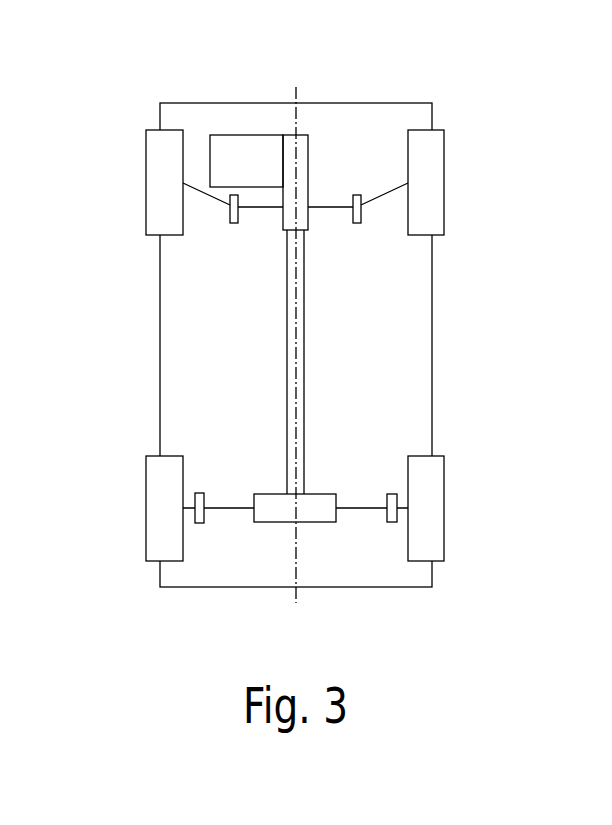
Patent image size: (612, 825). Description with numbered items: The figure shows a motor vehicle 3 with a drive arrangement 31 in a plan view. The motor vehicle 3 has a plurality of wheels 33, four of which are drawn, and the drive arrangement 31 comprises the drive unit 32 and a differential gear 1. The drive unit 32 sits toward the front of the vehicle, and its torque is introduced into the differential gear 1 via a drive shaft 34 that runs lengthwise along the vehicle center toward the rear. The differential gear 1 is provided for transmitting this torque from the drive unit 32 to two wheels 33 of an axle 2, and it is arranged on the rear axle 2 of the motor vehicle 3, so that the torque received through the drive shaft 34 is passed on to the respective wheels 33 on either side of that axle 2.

The differential gear 1 is at (312, 512).
The axle 2 is at (258, 208).
The motor vehicle 3 is at (409, 90).
The drive arrangement 31 is at (321, 90).
The drive unit 32 is at (241, 148).
The wheels 33 is at (160, 175).
The drive shaft 34 is at (305, 270).